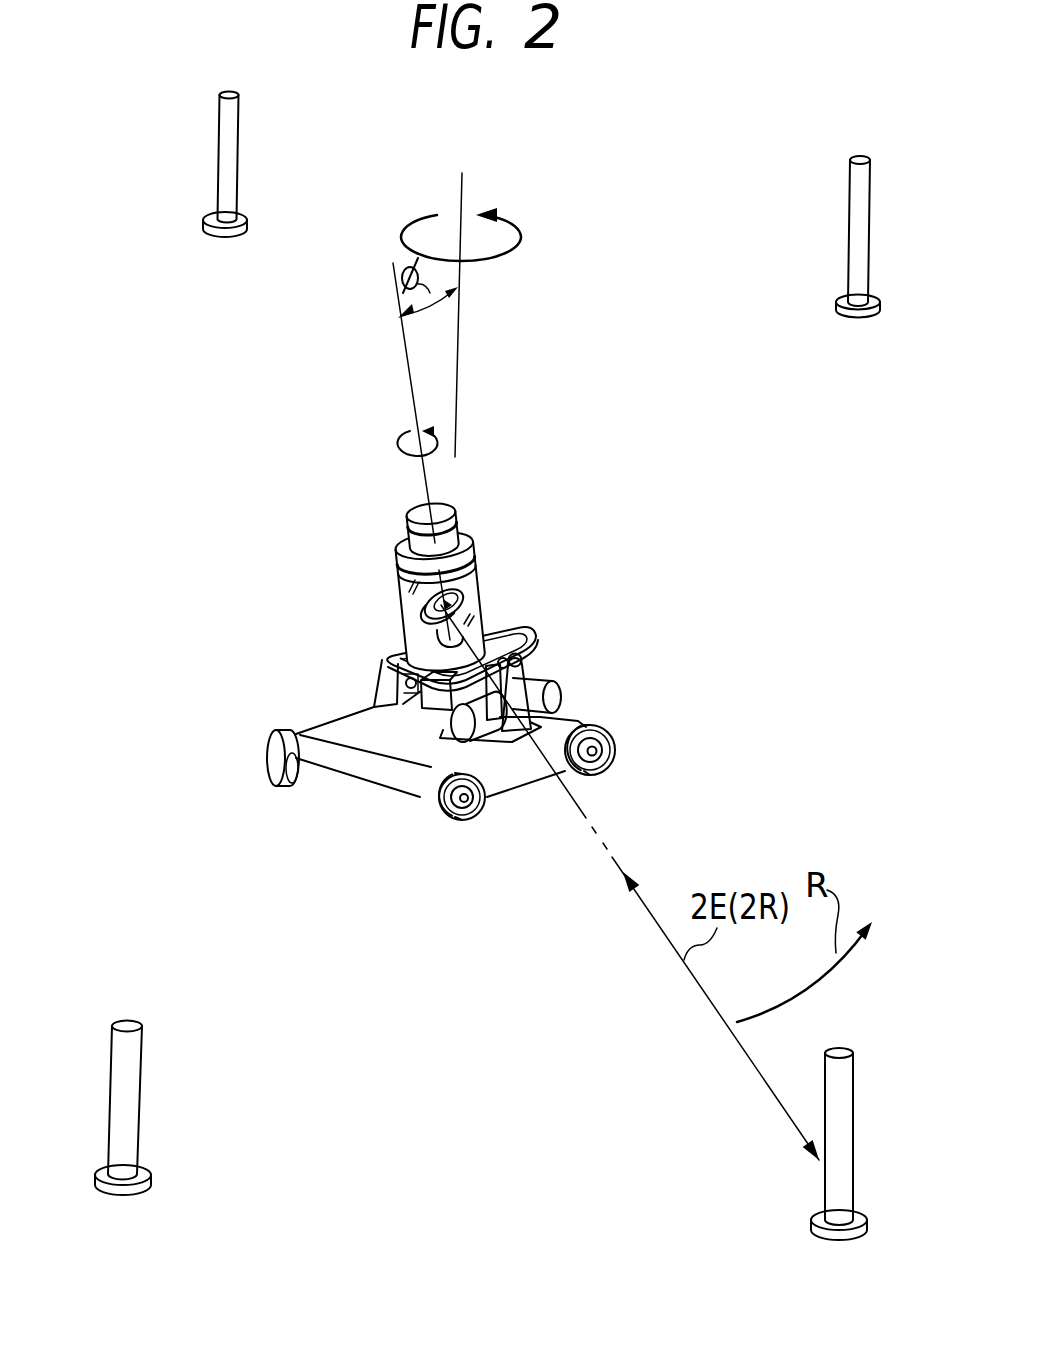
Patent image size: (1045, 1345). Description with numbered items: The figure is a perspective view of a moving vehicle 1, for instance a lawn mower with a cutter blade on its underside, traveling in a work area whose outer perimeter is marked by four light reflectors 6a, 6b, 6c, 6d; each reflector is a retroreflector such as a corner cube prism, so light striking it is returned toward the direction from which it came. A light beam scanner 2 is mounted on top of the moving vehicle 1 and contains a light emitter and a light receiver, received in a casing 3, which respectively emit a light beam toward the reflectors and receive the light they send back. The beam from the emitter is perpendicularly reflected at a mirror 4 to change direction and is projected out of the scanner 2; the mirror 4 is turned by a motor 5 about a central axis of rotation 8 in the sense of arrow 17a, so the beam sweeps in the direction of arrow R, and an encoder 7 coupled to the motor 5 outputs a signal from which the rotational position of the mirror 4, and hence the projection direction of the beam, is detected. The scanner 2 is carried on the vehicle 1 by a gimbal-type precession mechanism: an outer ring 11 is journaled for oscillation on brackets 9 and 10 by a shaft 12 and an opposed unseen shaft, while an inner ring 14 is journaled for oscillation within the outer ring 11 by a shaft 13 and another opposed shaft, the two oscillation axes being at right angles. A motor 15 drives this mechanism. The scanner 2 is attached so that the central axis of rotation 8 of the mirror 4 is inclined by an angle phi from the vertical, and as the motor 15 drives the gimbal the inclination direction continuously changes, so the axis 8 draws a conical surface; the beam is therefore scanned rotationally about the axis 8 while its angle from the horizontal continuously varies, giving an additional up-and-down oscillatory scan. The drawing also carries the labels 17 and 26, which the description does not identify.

The moving vehicle 1 is at (330, 713).
The light beam scanner 2 is at (492, 592).
The casing 3 is at (440, 697).
The mirror 4 is at (420, 637).
The motor 5 is at (430, 577).
The light reflector 6a is at (241, 178).
The light reflector 6b is at (133, 1108).
The light reflector 6c is at (828, 1080).
The light reflector 6d is at (856, 227).
The encoder 7 is at (450, 506).
The central axis of rotation 8 is at (412, 392).
The bracket 9 is at (545, 683).
The bracket 10 is at (386, 690).
The outer ring member 11 is at (522, 658).
The shaft 12 is at (533, 670).
The shaft 13 is at (400, 702).
The inner ring member 14 is at (508, 628).
The motor 15 is at (435, 736).
The vertical rotation axis 17 is at (455, 457).
The arrow 17a is at (517, 248).
The motor 26 is at (466, 722).